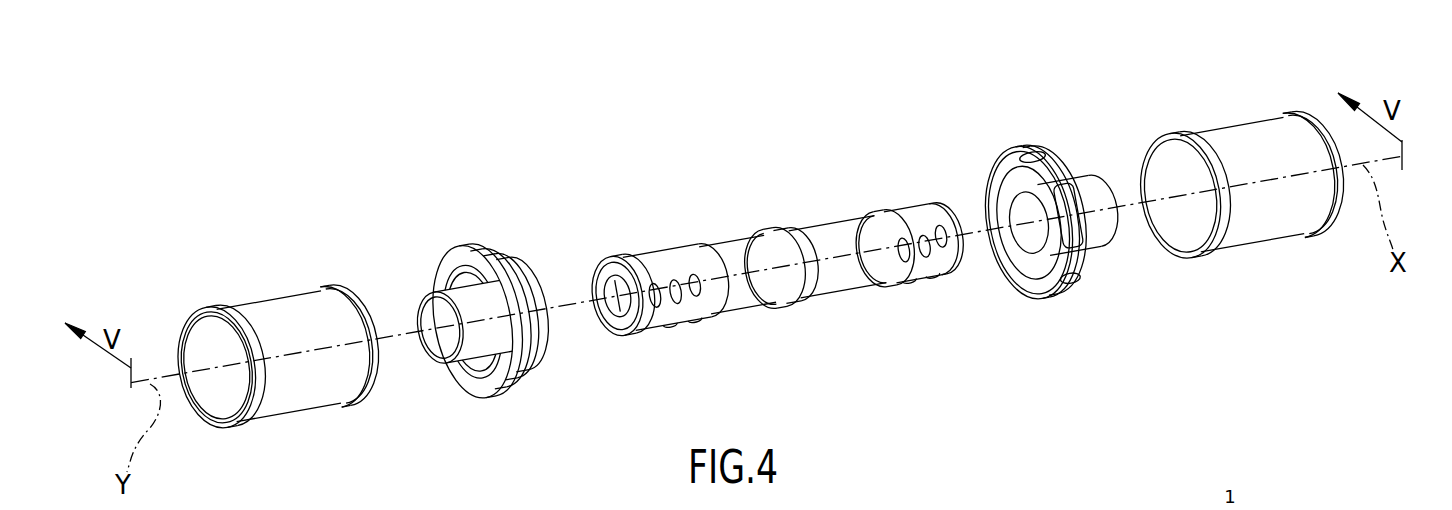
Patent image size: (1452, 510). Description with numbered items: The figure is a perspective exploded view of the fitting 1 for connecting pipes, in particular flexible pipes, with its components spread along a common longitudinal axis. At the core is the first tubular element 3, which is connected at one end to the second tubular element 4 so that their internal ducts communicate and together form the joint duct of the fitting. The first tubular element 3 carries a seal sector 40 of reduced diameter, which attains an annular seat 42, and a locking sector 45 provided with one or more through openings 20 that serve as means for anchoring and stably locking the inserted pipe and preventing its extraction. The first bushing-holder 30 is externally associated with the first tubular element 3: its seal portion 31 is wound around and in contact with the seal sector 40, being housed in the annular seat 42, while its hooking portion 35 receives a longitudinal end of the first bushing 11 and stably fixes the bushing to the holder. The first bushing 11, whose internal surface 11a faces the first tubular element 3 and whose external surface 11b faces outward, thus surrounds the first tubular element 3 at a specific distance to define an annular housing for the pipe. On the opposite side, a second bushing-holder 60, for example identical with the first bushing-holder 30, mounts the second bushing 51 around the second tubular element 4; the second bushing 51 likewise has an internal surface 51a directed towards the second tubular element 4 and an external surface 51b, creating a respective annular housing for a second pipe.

The fitting 1 is at (243, 72).
The first tubular element 3 is at (777, 245).
The second tubular element 4 is at (658, 210).
The first bushing 11 is at (1275, 80).
The internal surface 11a is at (1187, 220).
The external surface 11b is at (1280, 200).
The through openings 20 is at (943, 245).
The first bushing-holder 30 is at (1005, 116).
The seal portion 31 is at (1107, 190).
The hooking portion 35 is at (1088, 290).
The seal sector 40 is at (833, 254).
The annular seat 42 is at (845, 268).
The locking sector 45 is at (909, 254).
The second bushing 51 is at (186, 270).
The internal surface 51a is at (236, 382).
The external surface 51b is at (313, 382).
The second bushing-holder 60 is at (412, 232).